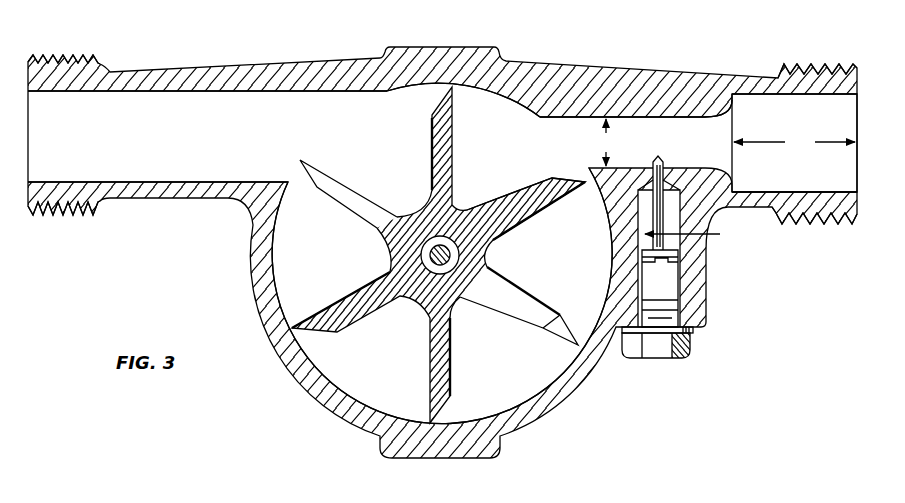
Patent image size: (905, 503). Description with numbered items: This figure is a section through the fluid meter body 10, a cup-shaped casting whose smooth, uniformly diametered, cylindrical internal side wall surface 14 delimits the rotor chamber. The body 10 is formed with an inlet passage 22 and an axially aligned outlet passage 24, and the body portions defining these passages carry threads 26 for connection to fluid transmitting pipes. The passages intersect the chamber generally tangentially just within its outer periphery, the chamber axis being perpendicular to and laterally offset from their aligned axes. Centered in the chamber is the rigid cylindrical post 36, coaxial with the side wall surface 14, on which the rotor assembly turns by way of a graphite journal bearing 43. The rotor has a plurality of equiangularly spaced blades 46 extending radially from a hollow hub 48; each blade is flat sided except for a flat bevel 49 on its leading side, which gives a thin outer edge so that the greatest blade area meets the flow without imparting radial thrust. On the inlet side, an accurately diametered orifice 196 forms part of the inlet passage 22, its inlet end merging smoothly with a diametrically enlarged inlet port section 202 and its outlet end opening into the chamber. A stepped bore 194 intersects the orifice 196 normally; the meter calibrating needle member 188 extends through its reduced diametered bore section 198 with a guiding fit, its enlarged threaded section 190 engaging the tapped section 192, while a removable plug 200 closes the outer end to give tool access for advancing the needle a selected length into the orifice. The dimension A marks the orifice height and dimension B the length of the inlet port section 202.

The body 10 is at (581, 391).
The internal side wall surface 14 is at (613, 246).
The inlet passage 22 is at (794, 143).
The outlet passage 24 is at (206, 92).
The threads 26 is at (70, 60).
The post 36 is at (459, 255).
The journal bearing 43 is at (438, 255).
The blades 46 is at (530, 326).
The hollow hub 48 is at (469, 209).
The flat bevel 49 is at (556, 175).
The meter calibrating needle member 188 is at (658, 257).
The threaded section 190 is at (660, 260).
The tapped section 192 is at (645, 217).
The stepped bore 194 is at (700, 233).
The orifice 196 is at (652, 112).
The reduced diametered bore section 198 is at (661, 158).
The plug 200 is at (657, 358).
The inlet port section 202 is at (775, 190).
The neck passage height A is at (605, 142).
The outlet bore length B is at (794, 142).